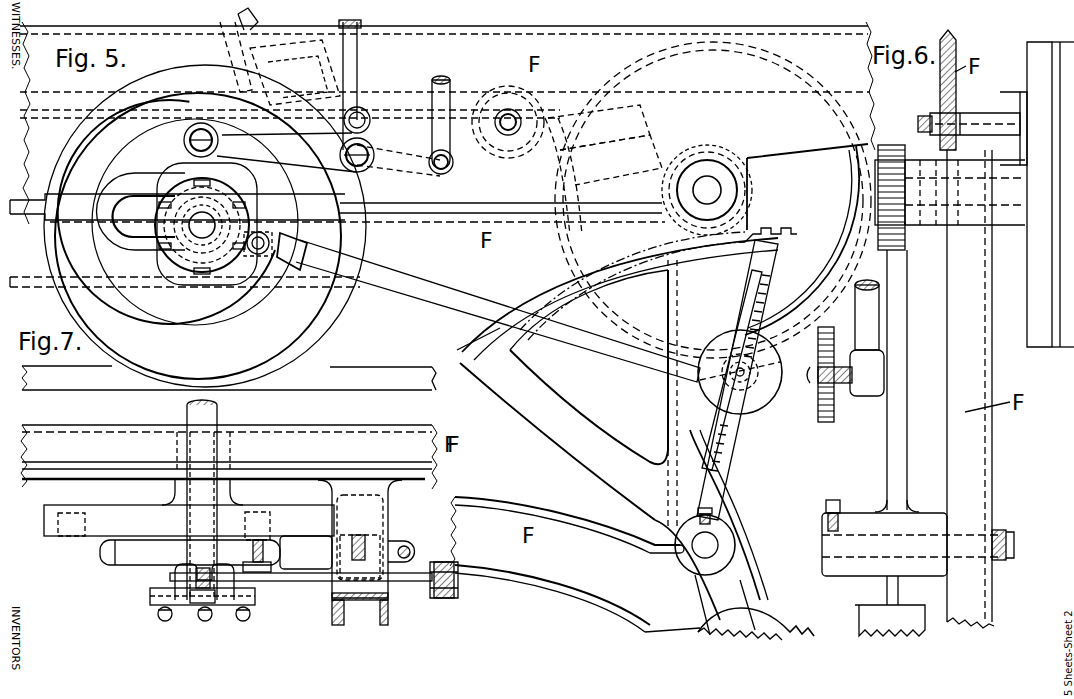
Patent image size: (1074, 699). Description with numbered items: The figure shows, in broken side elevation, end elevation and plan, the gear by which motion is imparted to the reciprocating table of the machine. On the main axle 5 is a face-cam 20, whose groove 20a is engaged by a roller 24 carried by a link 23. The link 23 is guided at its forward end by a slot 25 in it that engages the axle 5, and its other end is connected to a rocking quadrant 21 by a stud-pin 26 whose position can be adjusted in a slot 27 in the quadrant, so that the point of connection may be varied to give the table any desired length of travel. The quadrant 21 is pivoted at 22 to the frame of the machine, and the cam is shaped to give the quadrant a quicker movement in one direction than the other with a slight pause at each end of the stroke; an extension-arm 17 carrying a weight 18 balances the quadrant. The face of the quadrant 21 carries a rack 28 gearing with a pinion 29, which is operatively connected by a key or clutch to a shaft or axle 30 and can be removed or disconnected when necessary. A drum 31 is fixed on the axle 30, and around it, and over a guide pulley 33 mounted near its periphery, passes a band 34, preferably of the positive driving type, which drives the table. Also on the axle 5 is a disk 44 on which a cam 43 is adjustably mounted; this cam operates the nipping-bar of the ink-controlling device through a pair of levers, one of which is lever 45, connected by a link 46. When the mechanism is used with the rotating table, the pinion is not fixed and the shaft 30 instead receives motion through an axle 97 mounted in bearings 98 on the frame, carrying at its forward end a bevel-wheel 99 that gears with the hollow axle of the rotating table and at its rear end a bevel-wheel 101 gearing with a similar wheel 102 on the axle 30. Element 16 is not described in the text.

In FIG. 5, the main axle 5 is at (202, 225).
In FIG. 7, the main axle 5 is at (210, 418).
In FIG. 5, the bracket bar 16 is at (443, 122).
In FIG. 5, the extension-arm 17 is at (725, 605).
In FIG. 6, the extension-arm 17 is at (887, 594).
In FIG. 5, the weight 18 is at (782, 620).
In FIG. 6, the weight 18 is at (856, 612).
In FIG. 5, the face-cam 20 is at (205, 226).
In FIG. 7, the face-cam 20 is at (314, 512).
In FIG. 5, the groove 20a is at (98, 155).
In FIG. 7, the groove 20a is at (70, 518).
In FIG. 5, the rocking quadrant 21 is at (540, 408).
In FIG. 6, the rocking quadrant 21 is at (895, 434).
In FIG. 5, the pivot 22 is at (705, 541).
In FIG. 6, the pivot 22 is at (822, 552).
In FIG. 5, the link 23 is at (498, 311).
In FIG. 6, the link 23 is at (858, 312).
In FIG. 7, the link 23 is at (396, 544).
In FIG. 5, the roller 24 is at (270, 236).
In FIG. 7, the roller 24 is at (265, 530).
In FIG. 5, the slot 25 is at (125, 200).
In FIG. 7, the slot 25 is at (137, 552).
In FIG. 5, the stud-pin 26 is at (740, 372).
In FIG. 6, the stud-pin 26 is at (838, 373).
In FIG. 5, the slot 27 is at (742, 435).
In FIG. 6, the slot 27 is at (826, 374).
In FIG. 5, the rack 28 is at (595, 256).
In FIG. 6, the rack 28 is at (878, 246).
In FIG. 5, the pinion 29 is at (752, 184).
In FIG. 6, the pinion 29 is at (890, 145).
In FIG. 5, the shaft or axle 30 is at (707, 190).
In FIG. 6, the shaft or axle 30 is at (912, 176).
In FIG. 5, the drum 31 is at (842, 250).
In FIG. 6, the drum 31 is at (1027, 296).
In FIG. 5, the guide pulley or drum 33 is at (498, 163).
In FIG. 6, the guide pulley or drum 33 is at (1022, 112).
In FIG. 5, the band 34 is at (52, 88).
In FIG. 6, the band 34 is at (1050, 194).
In FIG. 5, the cam 43 is at (183, 172).
In FIG. 7, the cam 43 is at (150, 596).
In FIG. 5, the disk 44 is at (176, 258).
In FIG. 7, the disk 44 is at (160, 590).
In FIG. 5, the lever 45 is at (286, 152).
In FIG. 7, the lever 45 is at (282, 584).
In FIG. 5, the link 46 is at (441, 162).
In FIG. 7, the link 46 is at (454, 590).
In FIG. 5, the axle 97 is at (228, 48).
In FIG. 5, the bearings 98 is at (457, 110).
In FIG. 5, the bevel-wheel 99 is at (238, 16).
In FIG. 5, the bevel-wheel 101 is at (672, 150).
In FIG. 5, the bevel-wheel 102 is at (714, 150).